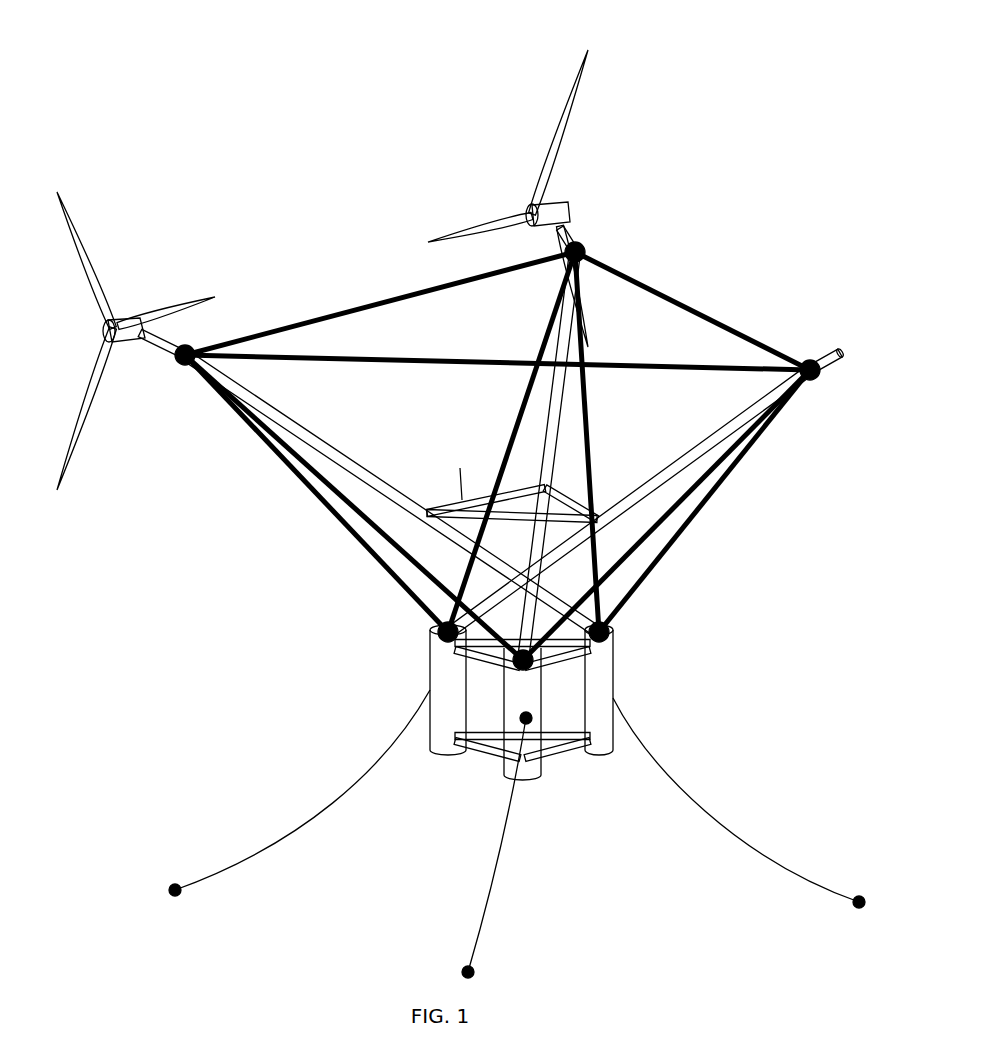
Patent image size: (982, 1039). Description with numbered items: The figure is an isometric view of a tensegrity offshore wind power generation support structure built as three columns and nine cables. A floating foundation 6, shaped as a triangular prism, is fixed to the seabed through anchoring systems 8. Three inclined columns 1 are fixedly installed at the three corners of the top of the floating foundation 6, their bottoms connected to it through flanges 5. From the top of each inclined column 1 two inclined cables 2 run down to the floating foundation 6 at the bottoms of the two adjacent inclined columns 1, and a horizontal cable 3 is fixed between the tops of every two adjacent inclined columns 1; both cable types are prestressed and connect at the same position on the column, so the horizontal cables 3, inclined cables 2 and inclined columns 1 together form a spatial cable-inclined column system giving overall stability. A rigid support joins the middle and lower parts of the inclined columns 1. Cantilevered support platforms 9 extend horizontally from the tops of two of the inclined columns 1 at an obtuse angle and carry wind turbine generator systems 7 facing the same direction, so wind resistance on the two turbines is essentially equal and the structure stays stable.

The inclined column 1 is at (318, 444).
The inclined cable 2 is at (307, 494).
The horizontal cable 3 is at (690, 303).
The flange 5 is at (438, 628).
The floating foundation 6 is at (430, 670).
The wind turbine generator system 7 is at (470, 222).
The anchoring system 8 is at (333, 807).
The cantilevered support platform 9 is at (148, 342).